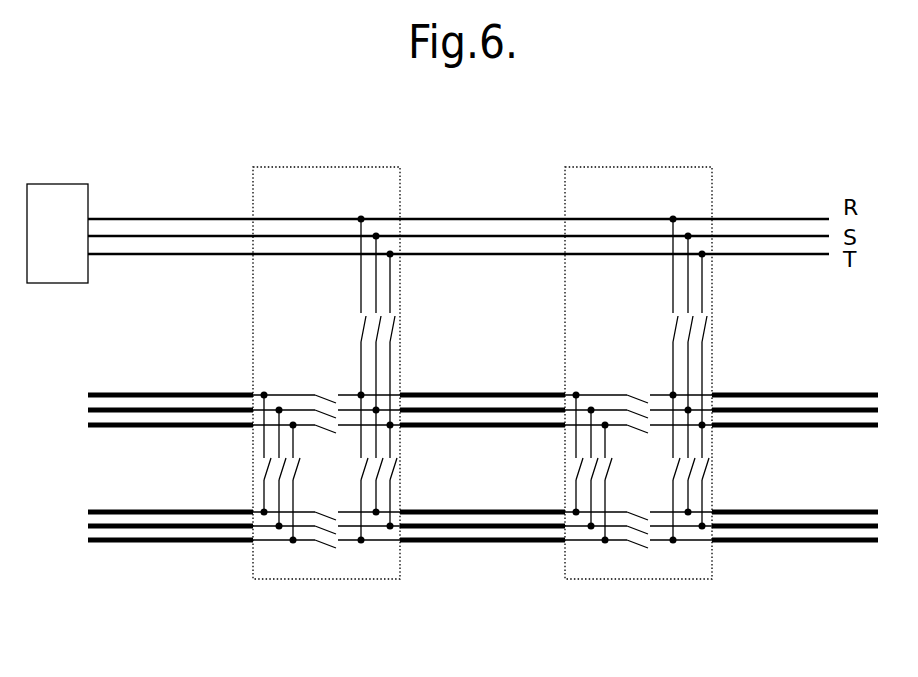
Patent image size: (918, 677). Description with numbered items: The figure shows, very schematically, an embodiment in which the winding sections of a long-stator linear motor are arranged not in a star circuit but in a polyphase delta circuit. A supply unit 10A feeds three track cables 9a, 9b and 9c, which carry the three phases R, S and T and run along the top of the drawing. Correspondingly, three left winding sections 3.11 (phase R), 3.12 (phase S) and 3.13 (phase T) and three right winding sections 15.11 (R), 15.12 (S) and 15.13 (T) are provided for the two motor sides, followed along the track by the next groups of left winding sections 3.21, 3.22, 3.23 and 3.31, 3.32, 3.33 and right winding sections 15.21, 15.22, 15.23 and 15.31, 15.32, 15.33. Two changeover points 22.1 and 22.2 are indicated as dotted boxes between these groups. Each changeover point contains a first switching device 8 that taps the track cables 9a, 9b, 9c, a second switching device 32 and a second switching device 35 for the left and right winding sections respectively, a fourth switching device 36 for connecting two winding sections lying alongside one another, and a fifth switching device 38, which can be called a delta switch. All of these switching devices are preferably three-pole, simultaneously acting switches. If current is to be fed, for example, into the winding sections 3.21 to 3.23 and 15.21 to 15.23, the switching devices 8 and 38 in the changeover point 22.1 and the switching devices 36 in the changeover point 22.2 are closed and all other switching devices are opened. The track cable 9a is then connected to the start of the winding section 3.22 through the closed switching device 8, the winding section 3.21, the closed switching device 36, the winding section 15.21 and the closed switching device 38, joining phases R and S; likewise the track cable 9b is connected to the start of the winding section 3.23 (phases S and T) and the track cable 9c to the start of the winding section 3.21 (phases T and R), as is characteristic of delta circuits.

The power supply / mains unit 10A is at (87, 197).
The track cable 9a is at (413, 217).
The track cable 9b is at (443, 236).
The track cable 9c is at (485, 253).
The changeover point 22.1 is at (331, 180).
The changeover point 22.2 is at (643, 180).
The first switching device 8 is at (415, 316).
The second switching device 32 is at (321, 373).
The second switching device 35 is at (320, 566).
The fourth switching device 36 is at (245, 463).
The fifth switching device 38 is at (348, 463).
The left winding section 3.11 is at (130, 392).
The left winding section 3.12 is at (172, 407).
The left winding section 3.13 is at (157, 427).
The left winding section 3.21 is at (450, 392).
The left winding section 3.22 is at (492, 407).
The left winding section 3.23 is at (477, 427).
The left winding section 3.31 is at (787, 392).
The left winding section 3.32 is at (828, 407).
The left winding section 3.33 is at (812, 427).
The right winding section 15.11 is at (110, 510).
The right winding section 15.12 is at (158, 524).
The right winding section 15.13 is at (137, 543).
The right winding section 15.21 is at (430, 510).
The right winding section 15.22 is at (478, 524).
The right winding section 15.23 is at (457, 543).
The right winding section 15.31 is at (762, 510).
The right winding section 15.32 is at (810, 524).
The right winding section 15.33 is at (789, 543).